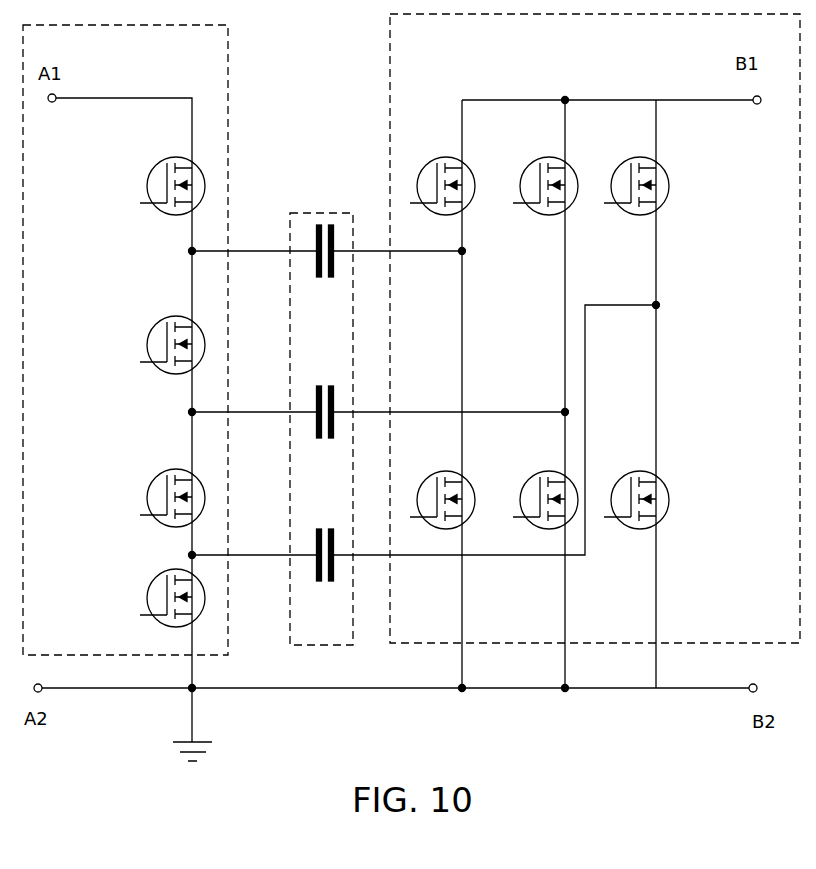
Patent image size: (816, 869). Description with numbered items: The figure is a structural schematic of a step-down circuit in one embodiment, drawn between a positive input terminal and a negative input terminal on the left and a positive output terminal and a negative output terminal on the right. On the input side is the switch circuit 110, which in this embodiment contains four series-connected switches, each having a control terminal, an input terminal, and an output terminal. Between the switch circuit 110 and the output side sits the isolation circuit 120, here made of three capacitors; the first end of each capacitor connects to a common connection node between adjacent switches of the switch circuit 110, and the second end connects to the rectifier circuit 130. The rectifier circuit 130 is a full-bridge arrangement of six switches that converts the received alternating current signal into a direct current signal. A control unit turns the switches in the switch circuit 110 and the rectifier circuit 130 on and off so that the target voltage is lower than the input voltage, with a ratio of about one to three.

The switch circuit 110 is at (214, 128).
The isolation circuit 120 is at (318, 213).
The rectifier circuit 130 is at (658, 160).